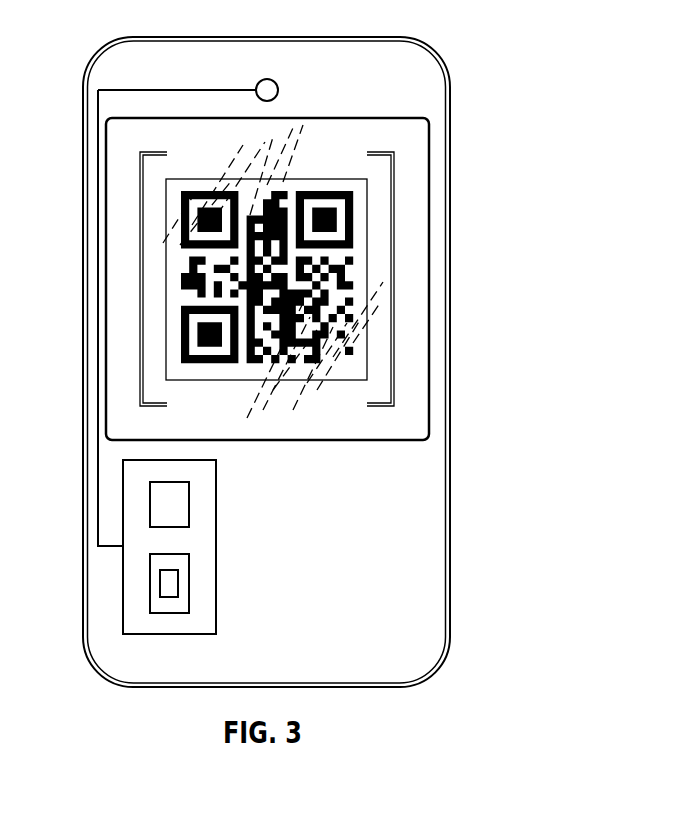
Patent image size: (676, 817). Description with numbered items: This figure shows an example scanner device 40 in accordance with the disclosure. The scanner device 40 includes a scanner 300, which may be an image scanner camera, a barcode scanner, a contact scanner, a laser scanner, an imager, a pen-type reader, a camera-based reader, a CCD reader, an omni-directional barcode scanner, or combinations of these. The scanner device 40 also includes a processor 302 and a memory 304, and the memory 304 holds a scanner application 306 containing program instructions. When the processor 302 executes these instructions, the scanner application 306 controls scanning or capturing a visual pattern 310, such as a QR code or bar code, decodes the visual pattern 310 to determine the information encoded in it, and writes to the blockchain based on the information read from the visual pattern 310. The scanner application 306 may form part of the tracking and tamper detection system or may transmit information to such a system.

The scanner device 40 is at (494, 35).
The scanner 300 is at (268, 78).
The visual pattern 310 is at (367, 211).
The processor 302 is at (190, 505).
The memory 304 is at (190, 568).
The scanner application 306 is at (178, 583).